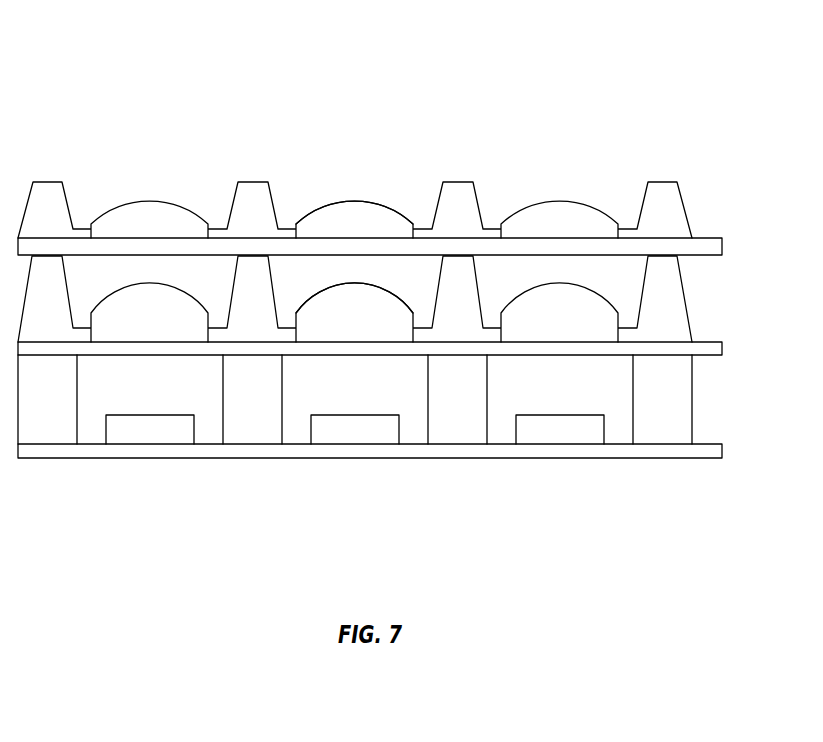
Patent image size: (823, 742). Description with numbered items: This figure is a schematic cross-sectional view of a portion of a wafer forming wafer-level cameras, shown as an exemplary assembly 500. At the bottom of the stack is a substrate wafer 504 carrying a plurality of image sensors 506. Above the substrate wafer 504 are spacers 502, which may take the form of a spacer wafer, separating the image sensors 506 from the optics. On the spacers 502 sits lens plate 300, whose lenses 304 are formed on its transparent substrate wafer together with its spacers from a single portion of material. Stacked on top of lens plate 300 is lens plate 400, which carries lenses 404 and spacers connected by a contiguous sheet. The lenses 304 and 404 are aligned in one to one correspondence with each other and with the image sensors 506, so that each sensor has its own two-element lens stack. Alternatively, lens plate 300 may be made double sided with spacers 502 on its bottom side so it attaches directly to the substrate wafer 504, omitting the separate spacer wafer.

The assembly 500 is at (154, 78).
The lens plate 400 is at (728, 177).
The lens 404 is at (318, 198).
The lens plate 300 is at (728, 257).
The lens 304 is at (368, 278).
The substrate wafer 504 is at (728, 358).
The spacer 502 is at (61, 403).
The image sensor 506 is at (350, 433).